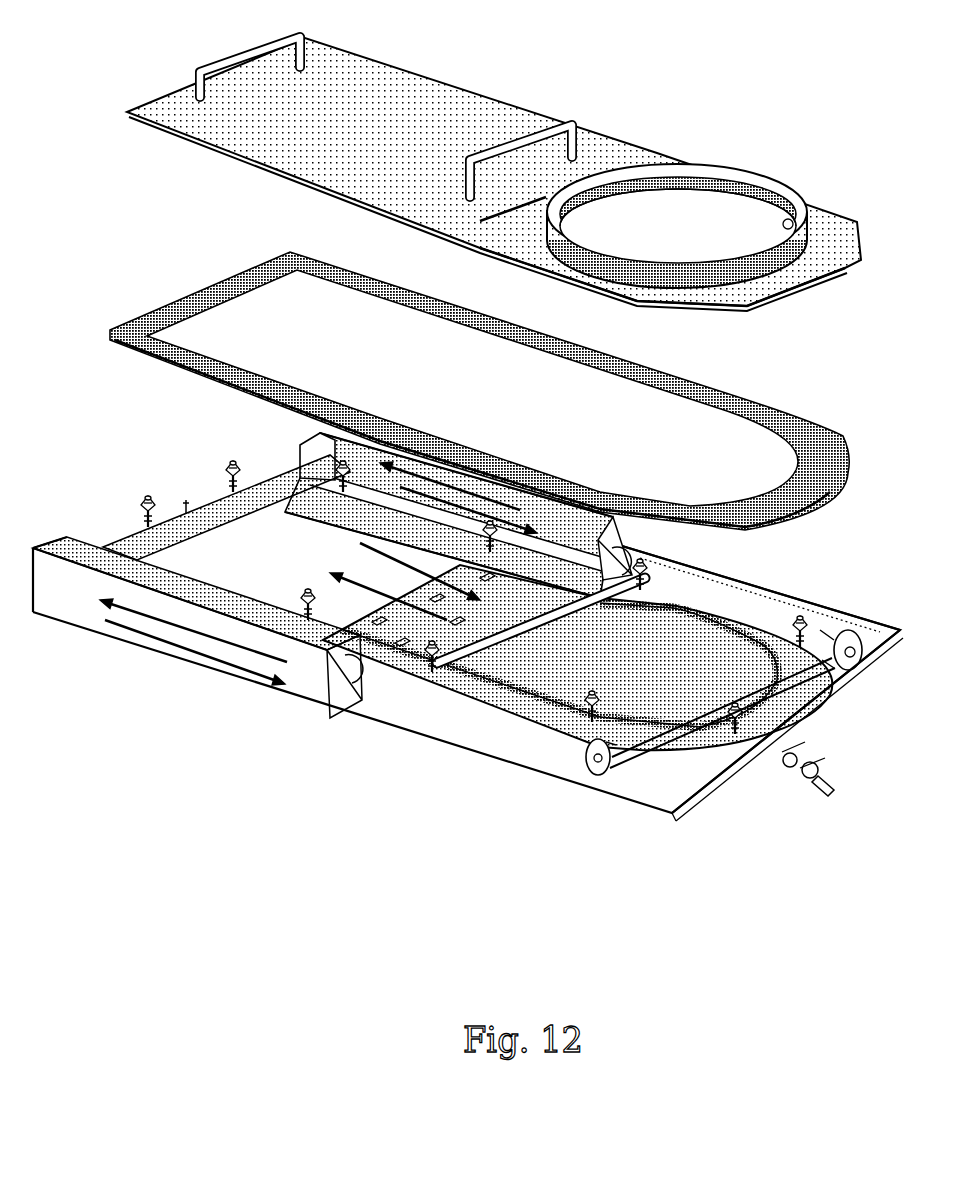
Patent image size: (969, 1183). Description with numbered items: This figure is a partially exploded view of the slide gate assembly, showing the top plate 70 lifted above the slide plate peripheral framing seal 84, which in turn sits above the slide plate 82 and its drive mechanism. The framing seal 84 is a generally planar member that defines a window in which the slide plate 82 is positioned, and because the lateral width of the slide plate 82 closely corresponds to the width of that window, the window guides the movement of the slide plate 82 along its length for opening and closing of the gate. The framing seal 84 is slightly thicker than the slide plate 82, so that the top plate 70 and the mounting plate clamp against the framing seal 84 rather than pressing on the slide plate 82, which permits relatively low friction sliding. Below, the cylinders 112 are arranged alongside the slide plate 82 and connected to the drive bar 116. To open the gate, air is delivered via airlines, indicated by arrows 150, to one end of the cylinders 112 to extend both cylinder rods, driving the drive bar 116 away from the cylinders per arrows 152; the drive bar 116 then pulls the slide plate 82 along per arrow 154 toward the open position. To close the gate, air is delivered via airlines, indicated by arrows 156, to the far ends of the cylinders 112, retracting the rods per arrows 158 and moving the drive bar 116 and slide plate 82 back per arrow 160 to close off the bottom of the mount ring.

The top plate 70 is at (428, 112).
The slide plate 82 is at (557, 680).
The framing seal 84 is at (730, 400).
The cylinders 112 is at (490, 718).
The drive bar 116 is at (302, 645).
The airlines (arrows) 150 is at (850, 665).
The arrows 152 is at (217, 640).
The arrow 154 is at (352, 575).
The airlines (arrows) 156 is at (842, 627).
The arrows 158 is at (247, 672).
The arrow 160 is at (393, 580).